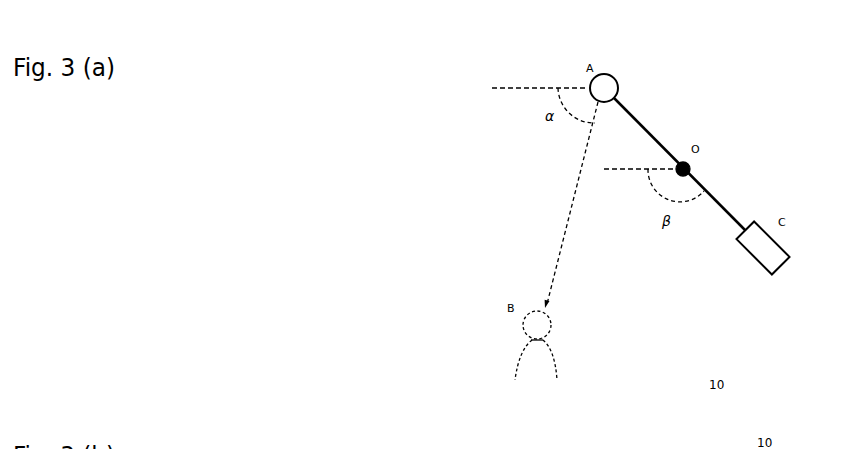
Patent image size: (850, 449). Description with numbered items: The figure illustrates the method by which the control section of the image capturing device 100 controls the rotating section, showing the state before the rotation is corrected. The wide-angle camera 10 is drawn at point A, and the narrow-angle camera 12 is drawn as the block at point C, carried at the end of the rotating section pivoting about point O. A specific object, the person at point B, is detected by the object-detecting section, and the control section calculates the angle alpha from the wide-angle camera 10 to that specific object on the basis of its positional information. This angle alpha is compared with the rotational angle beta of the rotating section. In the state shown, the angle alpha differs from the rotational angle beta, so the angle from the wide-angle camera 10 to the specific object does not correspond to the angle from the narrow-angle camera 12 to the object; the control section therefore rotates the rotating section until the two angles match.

The wide-angle camera 10 is at (667, 126).
The narrow-angle camera 12 is at (754, 269).
The image capturing device 100 is at (663, 396).